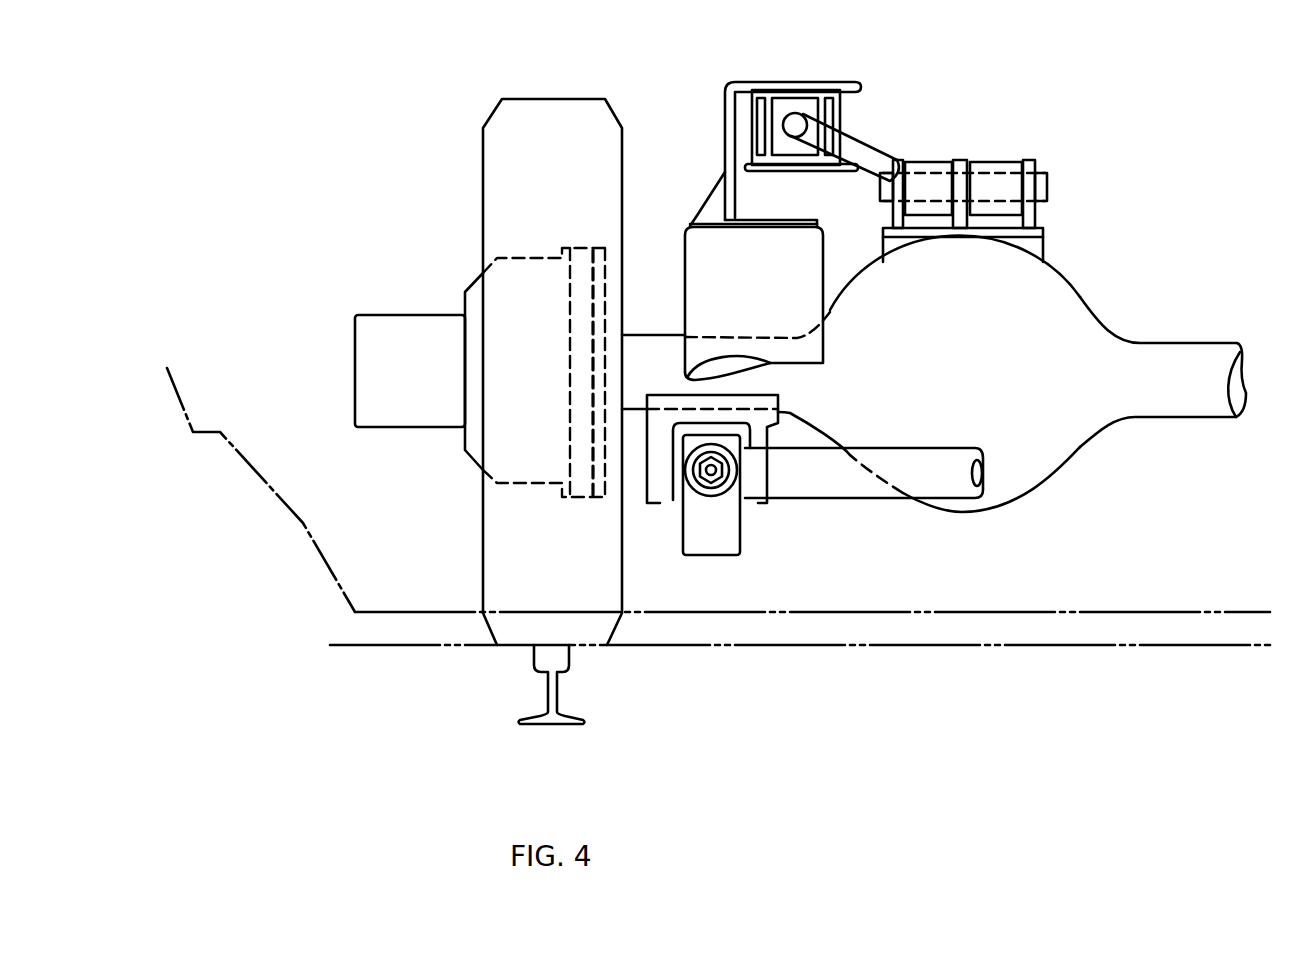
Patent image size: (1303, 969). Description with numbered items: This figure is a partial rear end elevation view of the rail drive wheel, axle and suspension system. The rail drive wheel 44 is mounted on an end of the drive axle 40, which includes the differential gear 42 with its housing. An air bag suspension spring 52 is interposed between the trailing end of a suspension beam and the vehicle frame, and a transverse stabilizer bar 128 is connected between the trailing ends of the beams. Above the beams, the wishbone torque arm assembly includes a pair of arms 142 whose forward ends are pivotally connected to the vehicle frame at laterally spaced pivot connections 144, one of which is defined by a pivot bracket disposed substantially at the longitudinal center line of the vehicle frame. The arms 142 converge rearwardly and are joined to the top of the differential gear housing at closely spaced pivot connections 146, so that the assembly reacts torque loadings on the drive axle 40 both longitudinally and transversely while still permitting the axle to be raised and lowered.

The drive axle 40 is at (1186, 275).
The differential gear 42 is at (1058, 303).
The rail drive wheel 44 is at (505, 553).
The air bag suspension spring 52 is at (808, 311).
The transverse stabilizer bar 128 is at (914, 460).
The torque arm 142 is at (874, 152).
The pivot connection 144 is at (792, 108).
The pivot connection 146 is at (934, 169).